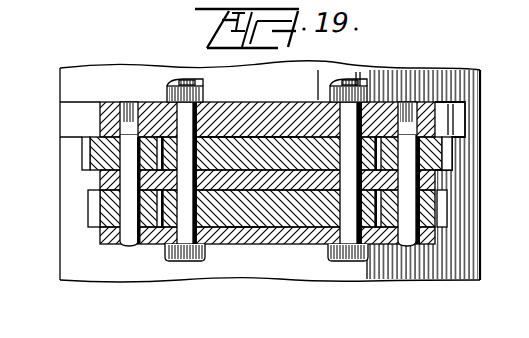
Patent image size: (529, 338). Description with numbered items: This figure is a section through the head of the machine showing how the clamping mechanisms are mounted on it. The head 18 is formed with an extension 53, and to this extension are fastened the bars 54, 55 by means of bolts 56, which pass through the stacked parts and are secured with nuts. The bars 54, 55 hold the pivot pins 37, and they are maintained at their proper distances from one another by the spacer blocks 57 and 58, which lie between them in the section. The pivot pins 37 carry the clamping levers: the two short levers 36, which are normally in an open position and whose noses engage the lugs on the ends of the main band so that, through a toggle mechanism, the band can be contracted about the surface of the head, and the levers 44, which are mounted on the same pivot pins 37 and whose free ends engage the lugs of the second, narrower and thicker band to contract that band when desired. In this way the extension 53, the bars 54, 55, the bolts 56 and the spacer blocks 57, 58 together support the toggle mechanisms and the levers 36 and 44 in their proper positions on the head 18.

The head 18 is at (466, 240).
The short levers 36 is at (90, 207).
The pivot pins 37 is at (136, 88).
The levers 44 is at (95, 152).
The extension 53 is at (215, 110).
The bar 54 is at (102, 178).
The bar 55 is at (288, 234).
The bolts 56 is at (166, 255).
The spacer block 57 is at (232, 143).
The spacer block 58 is at (244, 214).